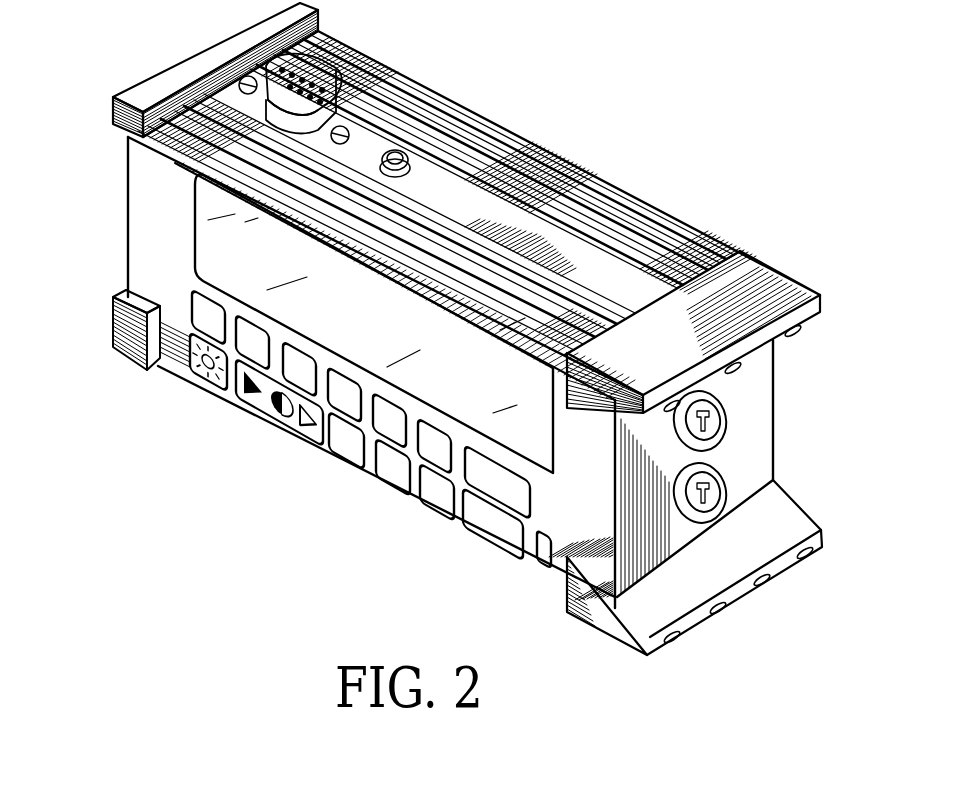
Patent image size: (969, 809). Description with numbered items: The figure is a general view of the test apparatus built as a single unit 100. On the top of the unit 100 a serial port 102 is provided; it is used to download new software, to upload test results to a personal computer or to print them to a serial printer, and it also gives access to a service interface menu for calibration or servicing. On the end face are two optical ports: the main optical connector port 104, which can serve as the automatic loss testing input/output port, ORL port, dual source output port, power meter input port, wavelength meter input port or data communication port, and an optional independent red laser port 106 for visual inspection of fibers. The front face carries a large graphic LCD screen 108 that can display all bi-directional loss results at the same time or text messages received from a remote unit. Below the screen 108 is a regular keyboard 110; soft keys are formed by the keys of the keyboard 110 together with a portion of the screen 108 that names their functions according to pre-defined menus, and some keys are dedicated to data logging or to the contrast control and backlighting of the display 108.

The single unit 100 is at (535, 183).
The serial port 102 is at (338, 92).
The main optical connector port 104 is at (723, 410).
The independent red laser port 106 is at (723, 477).
The large graphic LCD screen 108 is at (212, 200).
The keyboard 110 is at (193, 317).